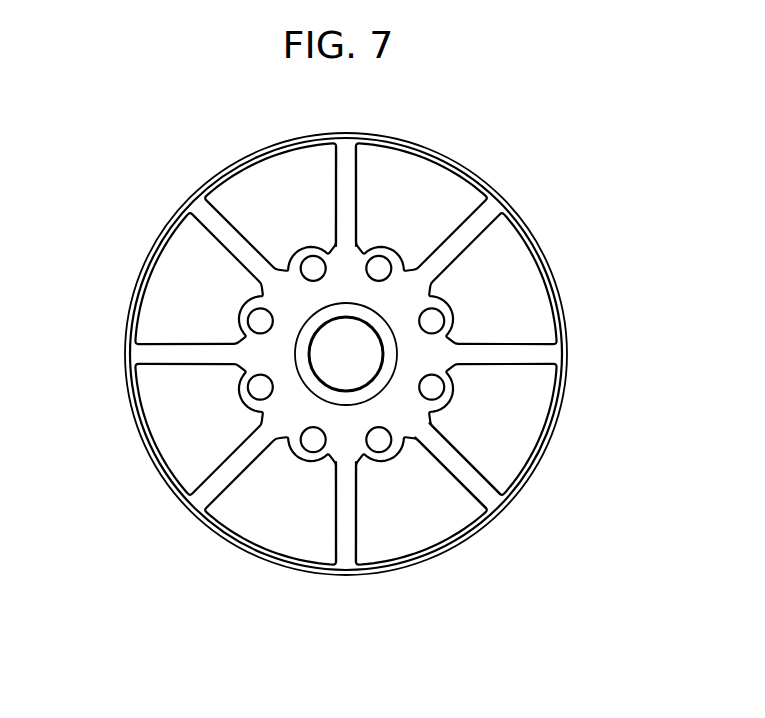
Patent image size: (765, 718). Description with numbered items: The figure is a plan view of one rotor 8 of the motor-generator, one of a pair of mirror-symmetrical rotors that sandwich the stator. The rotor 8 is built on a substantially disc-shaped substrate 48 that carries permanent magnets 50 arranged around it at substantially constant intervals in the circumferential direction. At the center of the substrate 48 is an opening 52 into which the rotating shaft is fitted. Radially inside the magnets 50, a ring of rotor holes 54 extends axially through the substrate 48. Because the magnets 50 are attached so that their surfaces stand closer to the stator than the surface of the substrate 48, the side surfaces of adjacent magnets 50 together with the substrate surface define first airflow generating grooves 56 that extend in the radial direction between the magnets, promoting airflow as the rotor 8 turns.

The rotor 8 is at (508, 193).
The substrate 48 is at (346, 157).
The permanent magnet 50 is at (422, 172).
The opening 52 is at (347, 336).
The rotor hole 54 is at (441, 390).
The first airflow generating groove 56 is at (345, 555).